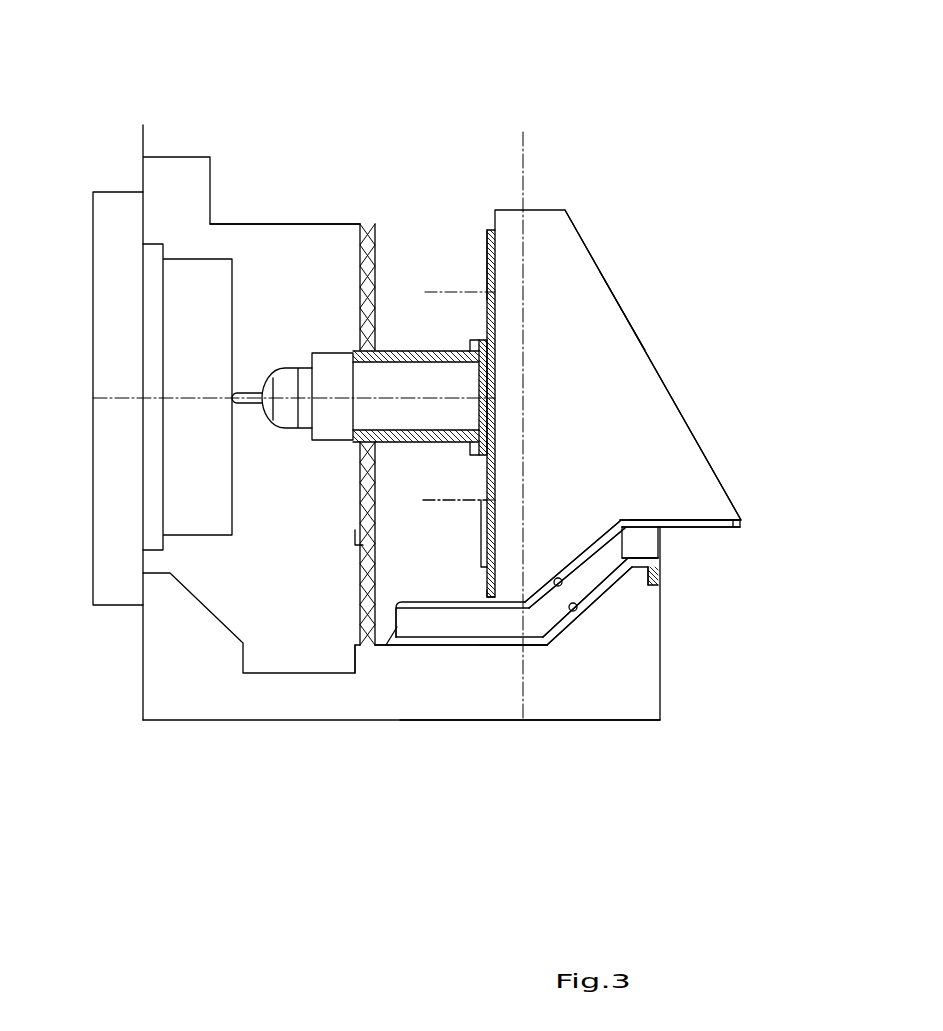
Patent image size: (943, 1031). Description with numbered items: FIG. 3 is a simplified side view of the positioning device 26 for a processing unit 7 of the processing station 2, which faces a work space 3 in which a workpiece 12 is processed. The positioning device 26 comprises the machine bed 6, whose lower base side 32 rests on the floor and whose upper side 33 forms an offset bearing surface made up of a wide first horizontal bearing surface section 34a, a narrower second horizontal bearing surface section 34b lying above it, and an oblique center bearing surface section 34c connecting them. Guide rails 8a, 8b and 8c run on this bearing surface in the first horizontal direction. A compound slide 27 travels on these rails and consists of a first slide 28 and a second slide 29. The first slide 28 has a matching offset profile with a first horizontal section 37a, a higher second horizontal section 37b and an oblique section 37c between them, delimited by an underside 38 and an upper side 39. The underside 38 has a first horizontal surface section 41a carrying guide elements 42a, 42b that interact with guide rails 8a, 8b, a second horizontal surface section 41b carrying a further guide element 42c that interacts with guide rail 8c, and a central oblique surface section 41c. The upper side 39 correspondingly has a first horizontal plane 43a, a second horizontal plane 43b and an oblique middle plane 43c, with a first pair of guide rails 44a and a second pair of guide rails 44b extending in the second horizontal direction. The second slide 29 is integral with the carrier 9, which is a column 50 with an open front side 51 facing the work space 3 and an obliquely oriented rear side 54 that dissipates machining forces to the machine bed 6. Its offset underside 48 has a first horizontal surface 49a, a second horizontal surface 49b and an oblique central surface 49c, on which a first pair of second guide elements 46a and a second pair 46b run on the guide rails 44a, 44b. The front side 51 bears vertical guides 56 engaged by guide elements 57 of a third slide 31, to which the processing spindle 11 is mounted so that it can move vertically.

The processing station 2 is at (265, 120).
The work space 3 is at (80, 138).
The machine bed 6 is at (647, 697).
The processing unit 7 is at (325, 305).
The guide rail 8a is at (418, 655).
The guide rail 8b is at (510, 657).
The guide rail 8c is at (660, 582).
The carrier 9 is at (648, 268).
The processing spindle 11 is at (335, 383).
The workpiece 12 is at (197, 357).
The positioning device 26 is at (373, 668).
The compound slide 27 is at (672, 505).
The first slide 28 is at (677, 543).
The second slide 29 is at (738, 520).
The third slide 31 is at (472, 327).
The lower base side 32 is at (542, 722).
The upper side 33 is at (358, 640).
The first horizontal bearing surface section 34a is at (388, 635).
The second horizontal bearing surface section 34b is at (659, 563).
The center bearing surface section 34c is at (553, 637).
The first horizontal section 37a is at (467, 623).
The second horizontal section 37b is at (632, 548).
The oblique section 37c is at (595, 607).
The underside 38 is at (488, 653).
The upper side 39 is at (410, 583).
The first horizontal surface section 41a is at (452, 637).
The second horizontal surface section 41b is at (640, 572).
The central oblique surface section 41c is at (574, 611).
The guide element 42a is at (402, 776).
The guide element 42b is at (509, 779).
The first guide element 42c is at (739, 634).
The first horizontal plane 43a is at (362, 565).
The second horizontal plane 43b is at (592, 548).
The middle plane 43c is at (620, 517).
The first pair of guide rails 44a is at (455, 563).
The second pair of guide rails 44b is at (700, 438).
The first pair of second guide elements 46a is at (493, 595).
The second pair of second guide elements 46b is at (641, 519).
The underside 48 is at (745, 528).
The first horizontal surface 49a is at (508, 597).
The second horizontal surface 49b is at (553, 582).
The central surface 49c is at (720, 512).
The column 50 is at (565, 252).
The front side 51 is at (490, 230).
The rear side 54 is at (627, 317).
The vertical guides 56 is at (483, 260).
The guide elements 57 is at (473, 343).